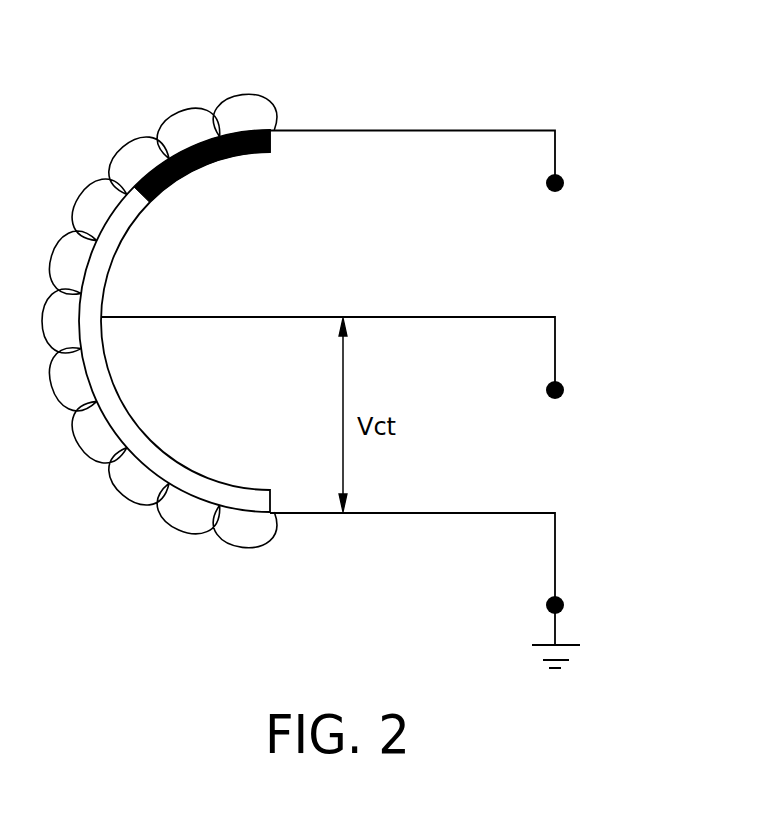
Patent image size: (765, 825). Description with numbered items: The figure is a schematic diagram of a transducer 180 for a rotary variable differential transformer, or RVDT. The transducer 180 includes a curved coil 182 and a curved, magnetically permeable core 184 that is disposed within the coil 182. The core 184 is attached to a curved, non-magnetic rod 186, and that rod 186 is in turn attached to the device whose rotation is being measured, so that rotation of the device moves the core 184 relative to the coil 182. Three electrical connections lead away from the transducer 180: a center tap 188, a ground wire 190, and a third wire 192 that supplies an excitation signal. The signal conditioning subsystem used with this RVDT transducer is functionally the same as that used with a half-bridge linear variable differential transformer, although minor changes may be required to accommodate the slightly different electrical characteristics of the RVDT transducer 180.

The transducer 180 is at (626, 77).
The curved coil 182 is at (72, 445).
The curved, magnetically permeable core 184 is at (165, 158).
The curved, non-magnetic rod 186 is at (153, 441).
The center tap 188 is at (445, 317).
The ground wire 190 is at (420, 514).
The third wire 192 is at (422, 130).